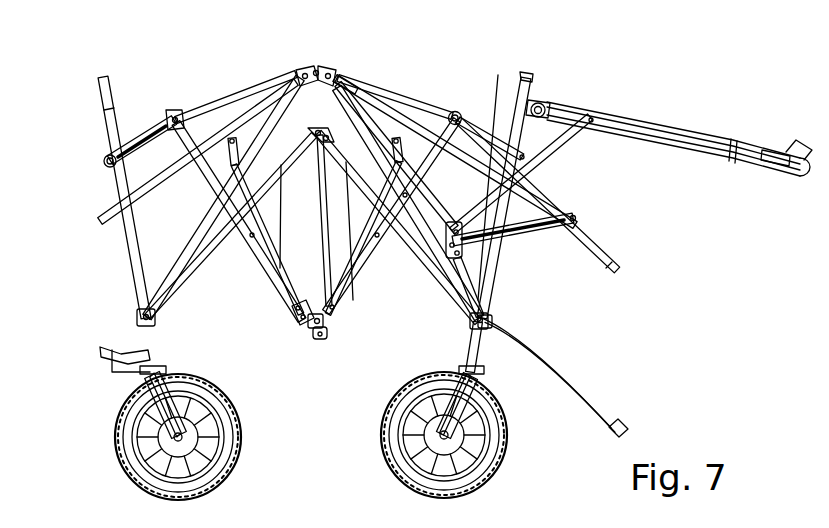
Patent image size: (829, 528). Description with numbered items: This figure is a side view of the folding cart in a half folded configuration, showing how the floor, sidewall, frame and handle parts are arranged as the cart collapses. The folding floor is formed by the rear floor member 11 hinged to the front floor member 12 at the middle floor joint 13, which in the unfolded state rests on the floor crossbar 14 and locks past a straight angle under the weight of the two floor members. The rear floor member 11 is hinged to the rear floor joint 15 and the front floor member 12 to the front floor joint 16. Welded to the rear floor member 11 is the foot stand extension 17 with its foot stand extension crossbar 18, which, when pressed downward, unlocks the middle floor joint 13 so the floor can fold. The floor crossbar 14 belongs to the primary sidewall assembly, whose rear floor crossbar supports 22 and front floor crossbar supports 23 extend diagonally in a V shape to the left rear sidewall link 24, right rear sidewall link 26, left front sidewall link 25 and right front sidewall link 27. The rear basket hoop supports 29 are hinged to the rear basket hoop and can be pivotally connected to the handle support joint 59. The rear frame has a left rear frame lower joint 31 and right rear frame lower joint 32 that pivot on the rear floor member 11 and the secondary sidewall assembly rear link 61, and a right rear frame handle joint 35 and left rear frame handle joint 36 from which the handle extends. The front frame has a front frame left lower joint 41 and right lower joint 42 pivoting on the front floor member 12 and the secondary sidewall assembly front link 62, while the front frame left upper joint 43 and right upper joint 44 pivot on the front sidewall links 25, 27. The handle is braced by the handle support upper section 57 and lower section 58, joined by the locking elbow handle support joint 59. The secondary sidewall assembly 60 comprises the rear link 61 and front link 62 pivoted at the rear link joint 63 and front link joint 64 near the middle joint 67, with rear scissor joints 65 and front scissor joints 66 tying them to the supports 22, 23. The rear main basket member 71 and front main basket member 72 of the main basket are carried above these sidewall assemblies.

The rear floor member 11 is at (336, 300).
The front floor member 12 is at (280, 288).
The middle floor joint 13 is at (325, 342).
The floor crossbar 14 is at (327, 331).
The rear floor joint 15 is at (470, 320).
The front floor joint 16 is at (165, 316).
The foot stand extension 17 is at (545, 361).
The foot stand extension crossbar 18 is at (622, 425).
The primary sidewall assembly rear floor crossbar supports 22 is at (370, 250).
The primary sidewall assembly front floor crossbar supports 23 is at (257, 262).
The primary sidewall assembly left rear sidewall link 24 is at (519, 175).
The primary sidewall assembly left front sidewall link 25 is at (154, 107).
The primary sidewall assembly right rear sidewall link 26 is at (462, 116).
The primary sidewall assembly right front sidewall link 27 is at (136, 143).
The rear basket hoop supports 29 is at (530, 234).
The left rear frame lower joint 31 is at (549, 326).
The right rear frame lower joint 32 is at (492, 318).
The right rear frame handle joint 35 is at (512, 181).
The left rear frame handle joint 36 is at (500, 150).
The front frame left lower joint 41 is at (102, 311).
The front frame right lower joint 42 is at (145, 314).
The front frame left upper joint 43 is at (67, 152).
The front frame right upper joint 44 is at (107, 162).
The handle support upper section 57 is at (578, 135).
The handle support lower section 58 is at (484, 284).
The handle support joint 59 is at (456, 230).
The secondary sidewall assembly 60 is at (371, 84).
The secondary sidewall assembly rear link 61 is at (370, 125).
The secondary sidewall assembly front link 62 is at (257, 108).
The secondary sidewall assembly rear link joint 63 is at (338, 78).
The secondary sidewall assembly front link joint 64 is at (295, 76).
The secondary sidewall assembly rear scissor joint 65 is at (399, 150).
The secondary sidewall assembly front scissor joint 66 is at (222, 196).
The secondary sidewall assembly middle joint 67 is at (316, 80).
The rear main basket member 71 is at (464, 165).
The front main basket member 72 is at (172, 168).